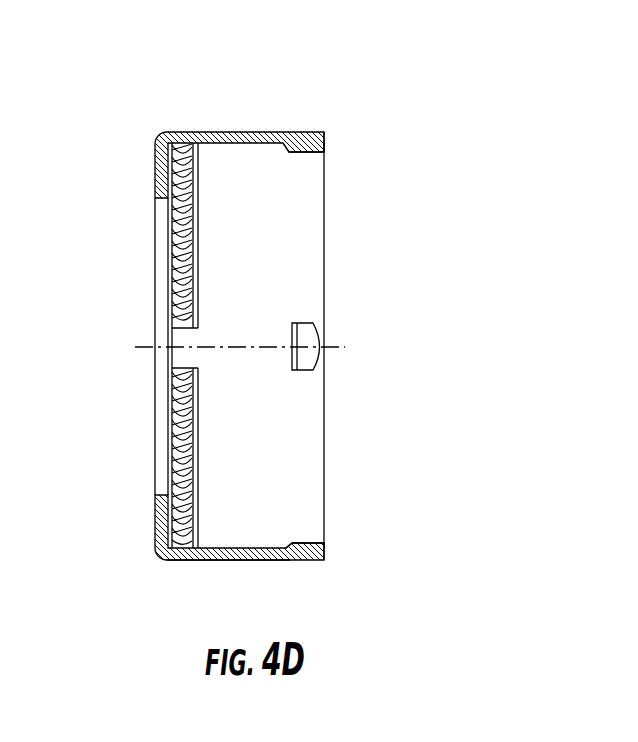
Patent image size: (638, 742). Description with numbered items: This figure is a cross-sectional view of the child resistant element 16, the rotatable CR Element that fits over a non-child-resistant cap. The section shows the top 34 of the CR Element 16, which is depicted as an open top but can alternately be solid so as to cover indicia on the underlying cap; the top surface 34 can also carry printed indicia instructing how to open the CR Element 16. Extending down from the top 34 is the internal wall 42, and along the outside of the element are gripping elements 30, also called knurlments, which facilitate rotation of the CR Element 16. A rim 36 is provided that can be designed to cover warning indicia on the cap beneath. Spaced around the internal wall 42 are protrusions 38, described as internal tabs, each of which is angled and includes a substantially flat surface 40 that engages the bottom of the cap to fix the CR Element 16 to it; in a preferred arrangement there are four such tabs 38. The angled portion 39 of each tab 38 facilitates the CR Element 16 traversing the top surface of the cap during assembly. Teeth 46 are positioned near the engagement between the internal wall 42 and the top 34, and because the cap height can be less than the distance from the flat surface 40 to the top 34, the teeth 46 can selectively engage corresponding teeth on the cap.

The child resistant element 16 is at (128, 108).
The gripping elements 30 is at (213, 562).
The top 34 is at (160, 518).
The rim 36 is at (170, 497).
The protrusion 38 is at (313, 132).
The angled portion 39 is at (310, 150).
The flat surface 40 is at (282, 133).
The internal wall 42 is at (276, 244).
The teeth 46 is at (197, 224).